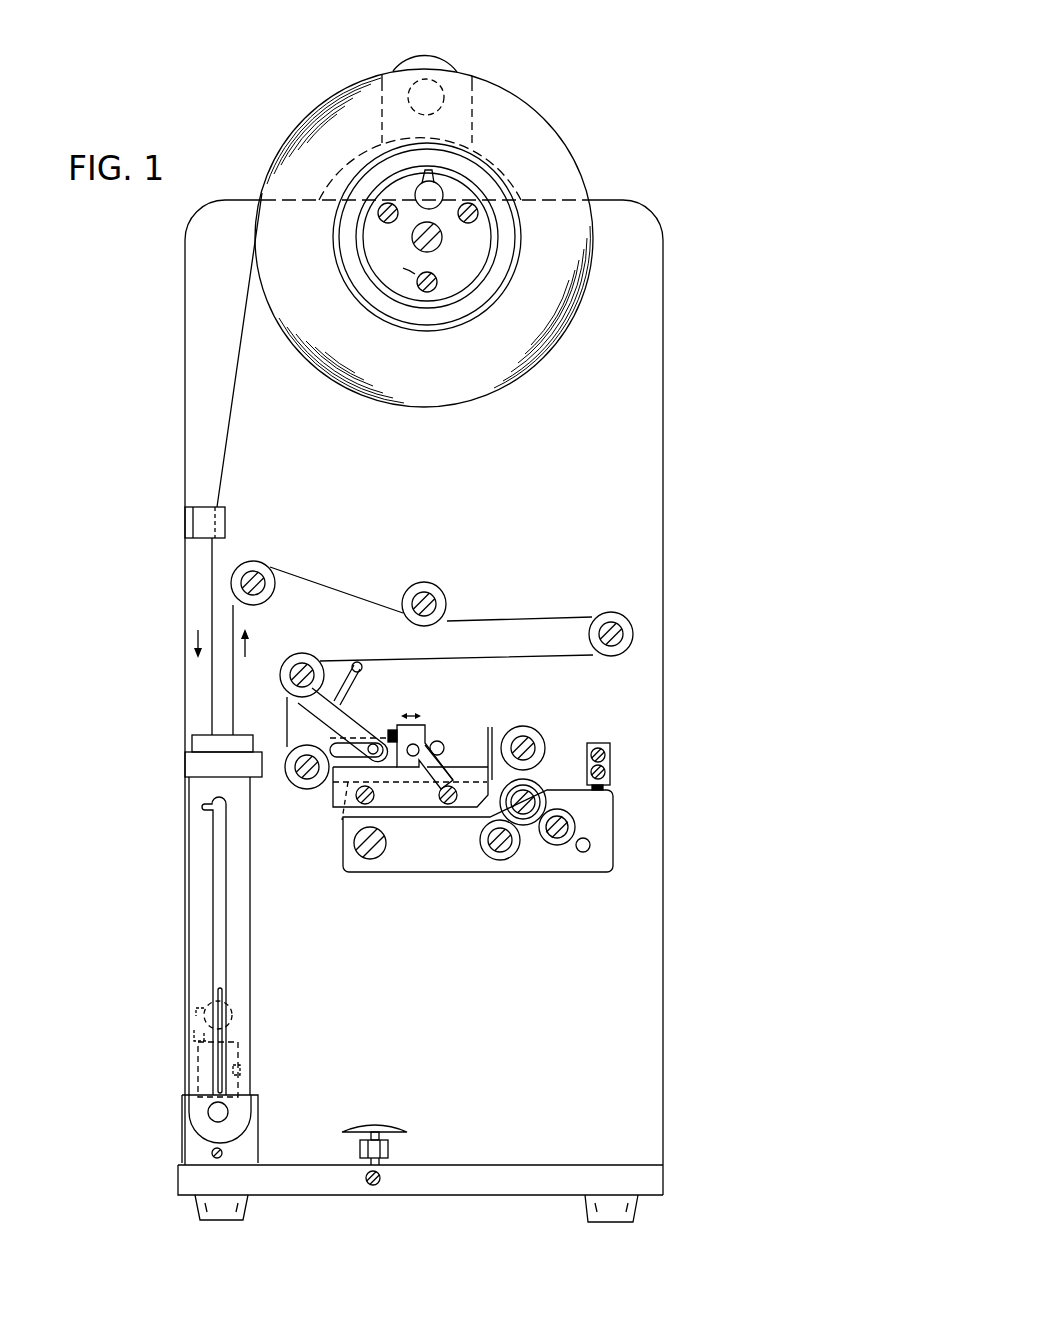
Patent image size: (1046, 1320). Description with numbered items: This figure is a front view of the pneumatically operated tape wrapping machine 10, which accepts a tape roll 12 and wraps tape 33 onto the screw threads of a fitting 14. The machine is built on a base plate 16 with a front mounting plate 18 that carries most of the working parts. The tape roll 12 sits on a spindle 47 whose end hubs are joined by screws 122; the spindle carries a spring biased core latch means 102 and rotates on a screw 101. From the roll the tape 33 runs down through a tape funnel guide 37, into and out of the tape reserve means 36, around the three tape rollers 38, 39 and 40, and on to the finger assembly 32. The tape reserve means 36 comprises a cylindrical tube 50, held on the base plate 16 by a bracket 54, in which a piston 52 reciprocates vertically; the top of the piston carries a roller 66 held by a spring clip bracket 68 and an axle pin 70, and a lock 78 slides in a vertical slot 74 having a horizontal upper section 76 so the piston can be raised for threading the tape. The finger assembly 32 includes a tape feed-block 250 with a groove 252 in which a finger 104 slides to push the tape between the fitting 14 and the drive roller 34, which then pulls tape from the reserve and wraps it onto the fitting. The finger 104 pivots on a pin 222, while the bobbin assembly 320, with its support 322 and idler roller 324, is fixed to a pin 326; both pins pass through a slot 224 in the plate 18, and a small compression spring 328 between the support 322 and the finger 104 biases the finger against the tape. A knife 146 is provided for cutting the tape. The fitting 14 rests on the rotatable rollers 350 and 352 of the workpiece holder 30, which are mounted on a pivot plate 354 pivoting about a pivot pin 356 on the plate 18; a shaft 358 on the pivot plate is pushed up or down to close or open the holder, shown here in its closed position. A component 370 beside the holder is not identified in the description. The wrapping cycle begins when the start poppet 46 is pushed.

The tape wrapping machine 10 is at (449, 656).
The tape roll 12 is at (303, 106).
The fitting 14 is at (548, 790).
The base plate 16 is at (447, 1193).
The front mounting plate 18 is at (663, 376).
The workpiece holder 30 is at (543, 779).
The finger assembly 32 is at (440, 776).
The tape 33 is at (228, 444).
The drive roller 34 is at (544, 743).
The tape reserve means 36 is at (234, 949).
The tape funnel guide 37 is at (225, 516).
The tape roller 38 is at (268, 568).
The tape roller 39 is at (441, 587).
The tape roller 40 is at (611, 612).
The start poppet 46 is at (394, 1148).
The spindle 47 is at (455, 271).
The cylindrical tube 50 is at (250, 1046).
The piston 52 is at (240, 1070).
The bracket 54 is at (256, 1150).
The roller 66 is at (194, 1012).
The spring clip bracket 68 is at (196, 1033).
The axle pin 70 is at (232, 1016).
The vertical slot 74 is at (222, 993).
The horizontal upper section 76 is at (202, 812).
The lock 78 is at (229, 1112).
The screw 101 is at (440, 243).
The spring biased core latch means 102 is at (437, 188).
The finger 104 is at (429, 776).
The screws 122 is at (393, 224).
The knife 146 is at (491, 728).
The pin 222 is at (413, 757).
The slot 224 is at (441, 746).
The tape feed-block 250 is at (385, 791).
The groove 252 is at (333, 806).
The bobbin assembly 320 is at (344, 699).
The support 322 is at (350, 690).
The idler roller 324 is at (292, 655).
The pin 326 is at (372, 745).
The small compression spring 328 is at (393, 729).
The rotatable roller 350 is at (505, 861).
The rotatable roller 352 is at (573, 826).
The pivot plate 354 is at (502, 845).
The pivot pin 356 is at (377, 861).
The shaft 358 is at (587, 852).
The switch 370 is at (611, 757).